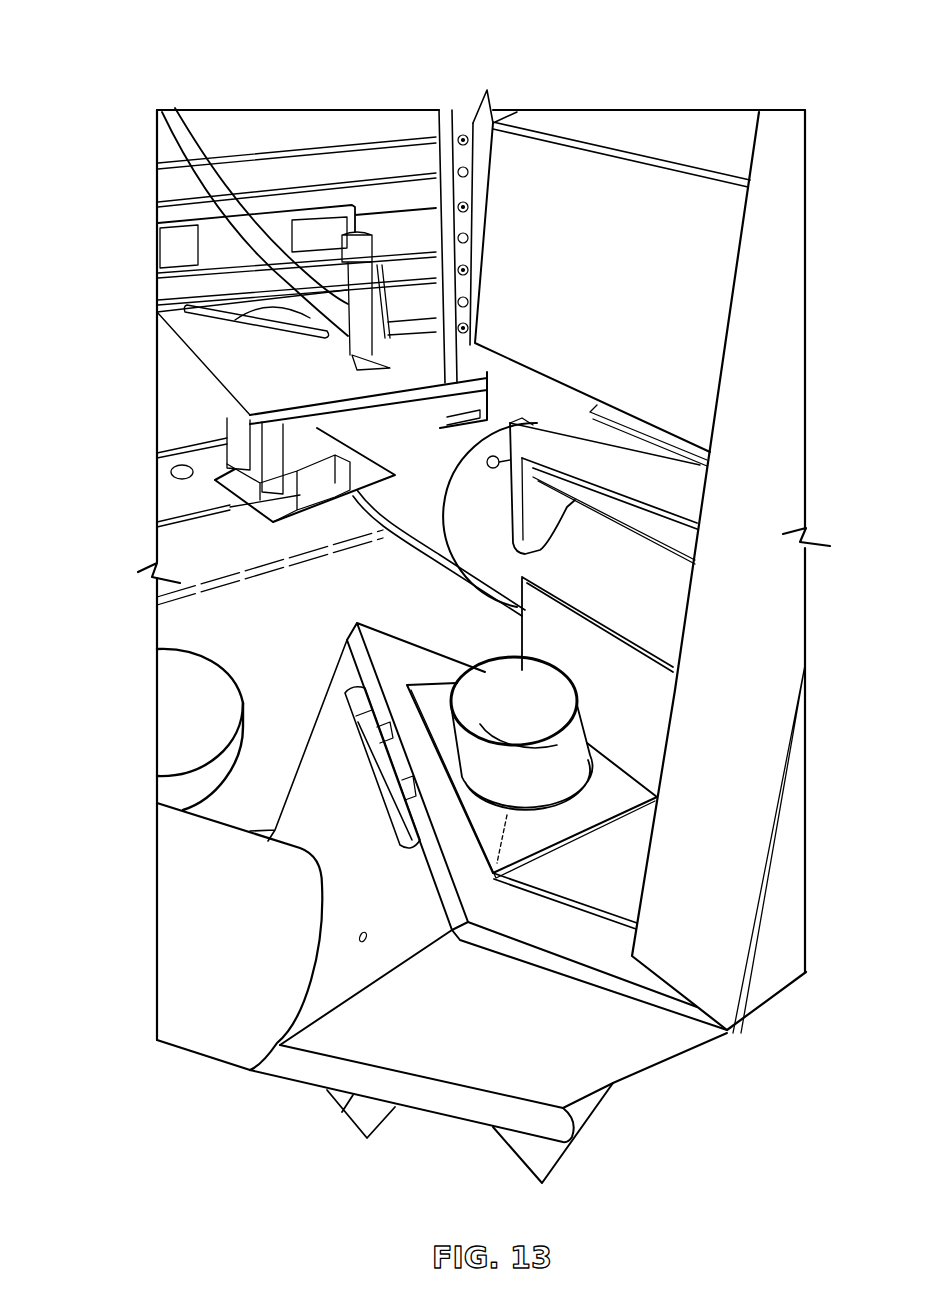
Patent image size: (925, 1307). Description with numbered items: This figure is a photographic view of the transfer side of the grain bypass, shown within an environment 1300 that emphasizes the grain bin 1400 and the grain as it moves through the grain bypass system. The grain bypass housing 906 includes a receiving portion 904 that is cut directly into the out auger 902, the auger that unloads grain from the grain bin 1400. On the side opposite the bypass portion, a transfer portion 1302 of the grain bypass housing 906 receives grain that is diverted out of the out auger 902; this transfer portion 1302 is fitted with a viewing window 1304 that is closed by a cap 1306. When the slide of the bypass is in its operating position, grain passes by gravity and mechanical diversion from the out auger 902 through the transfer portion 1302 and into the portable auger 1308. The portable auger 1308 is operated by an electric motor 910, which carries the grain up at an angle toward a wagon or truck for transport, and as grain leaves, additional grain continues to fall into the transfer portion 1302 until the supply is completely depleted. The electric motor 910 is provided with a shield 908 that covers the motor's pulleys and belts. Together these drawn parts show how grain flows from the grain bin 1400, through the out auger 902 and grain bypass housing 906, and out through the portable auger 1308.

The environment 1300 is at (133, 40).
The grain bin 1400 is at (283, 170).
The electric motor 910 is at (626, 297).
The shield 908 is at (756, 692).
The grain bypass housing 906 is at (648, 715).
The receiving portion 904 is at (503, 552).
The out auger 902 is at (448, 464).
The transfer portion 1302 is at (513, 1038).
The viewing window 1304 is at (553, 786).
The cap 1306 is at (228, 710).
The portable auger 1308 is at (253, 916).